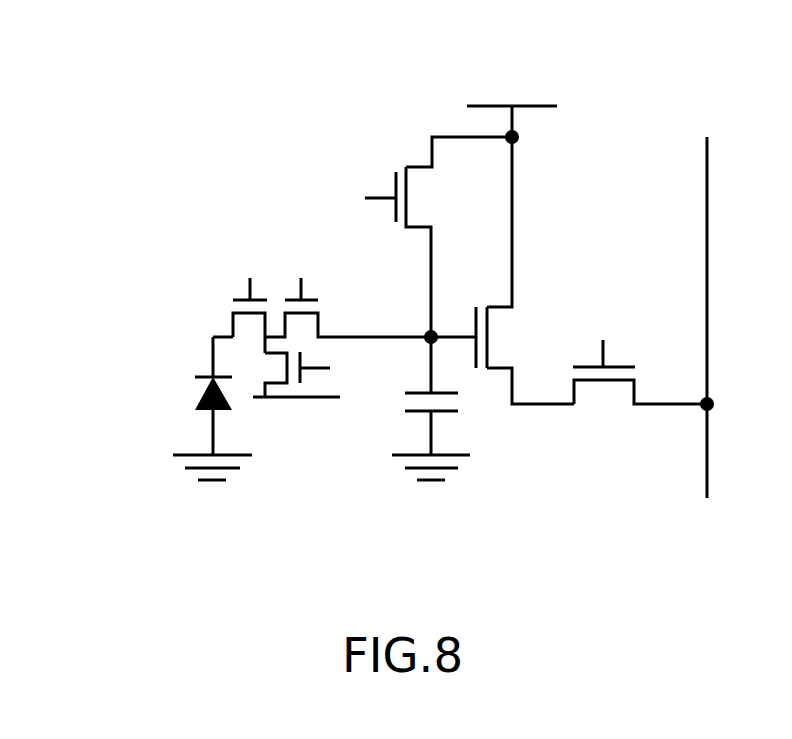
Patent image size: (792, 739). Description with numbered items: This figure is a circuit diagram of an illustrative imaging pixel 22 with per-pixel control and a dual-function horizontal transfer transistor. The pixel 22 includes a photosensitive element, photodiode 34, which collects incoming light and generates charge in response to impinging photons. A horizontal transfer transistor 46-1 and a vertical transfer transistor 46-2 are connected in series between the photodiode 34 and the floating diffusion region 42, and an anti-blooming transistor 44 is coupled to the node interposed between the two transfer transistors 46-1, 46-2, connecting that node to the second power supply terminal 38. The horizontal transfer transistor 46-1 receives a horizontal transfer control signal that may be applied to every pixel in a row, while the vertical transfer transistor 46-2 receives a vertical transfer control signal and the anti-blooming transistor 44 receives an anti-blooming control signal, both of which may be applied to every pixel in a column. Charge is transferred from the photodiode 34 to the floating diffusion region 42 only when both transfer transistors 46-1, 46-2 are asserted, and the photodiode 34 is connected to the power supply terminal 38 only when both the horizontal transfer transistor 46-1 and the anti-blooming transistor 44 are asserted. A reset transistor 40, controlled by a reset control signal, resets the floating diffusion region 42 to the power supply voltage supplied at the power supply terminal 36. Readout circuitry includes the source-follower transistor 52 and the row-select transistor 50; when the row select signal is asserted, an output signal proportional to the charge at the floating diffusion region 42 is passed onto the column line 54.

The image pixel 22 is at (242, 162).
The photodiode 34 is at (160, 438).
The power supply terminal 36 is at (568, 82).
The second power supply terminal 38 is at (329, 439).
The reset transistor 40 is at (404, 140).
The floating diffusion region 42 is at (443, 313).
The anti-blooming transistor 44 is at (273, 368).
The horizontal transfer transistor 46-1 is at (218, 307).
The vertical transfer transistor 46-2 is at (370, 283).
The row-select transistor 50 is at (603, 418).
The source-follower transistor 52 is at (483, 290).
The column line 54 is at (710, 274).